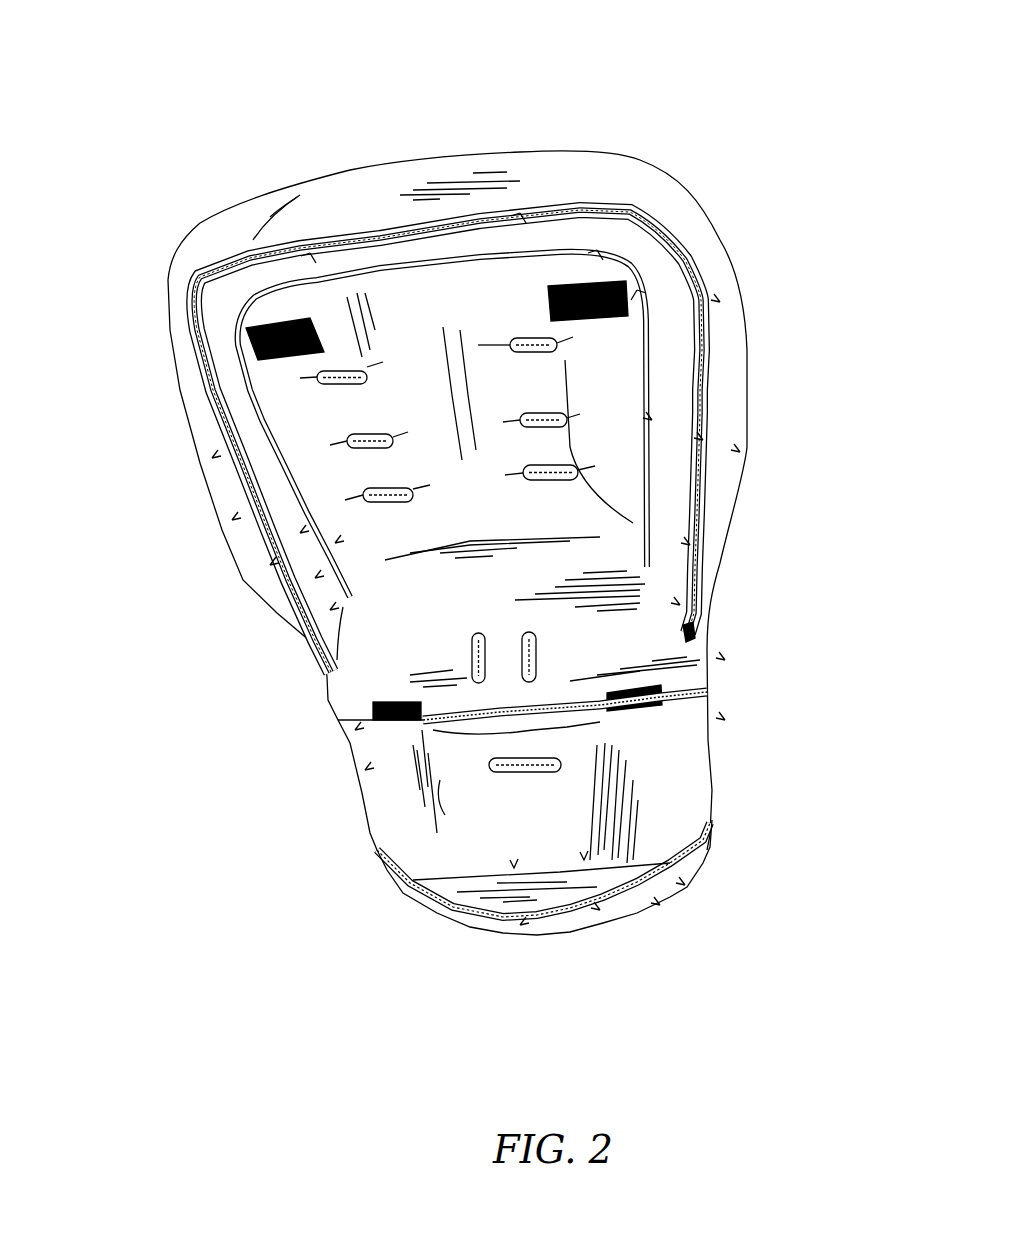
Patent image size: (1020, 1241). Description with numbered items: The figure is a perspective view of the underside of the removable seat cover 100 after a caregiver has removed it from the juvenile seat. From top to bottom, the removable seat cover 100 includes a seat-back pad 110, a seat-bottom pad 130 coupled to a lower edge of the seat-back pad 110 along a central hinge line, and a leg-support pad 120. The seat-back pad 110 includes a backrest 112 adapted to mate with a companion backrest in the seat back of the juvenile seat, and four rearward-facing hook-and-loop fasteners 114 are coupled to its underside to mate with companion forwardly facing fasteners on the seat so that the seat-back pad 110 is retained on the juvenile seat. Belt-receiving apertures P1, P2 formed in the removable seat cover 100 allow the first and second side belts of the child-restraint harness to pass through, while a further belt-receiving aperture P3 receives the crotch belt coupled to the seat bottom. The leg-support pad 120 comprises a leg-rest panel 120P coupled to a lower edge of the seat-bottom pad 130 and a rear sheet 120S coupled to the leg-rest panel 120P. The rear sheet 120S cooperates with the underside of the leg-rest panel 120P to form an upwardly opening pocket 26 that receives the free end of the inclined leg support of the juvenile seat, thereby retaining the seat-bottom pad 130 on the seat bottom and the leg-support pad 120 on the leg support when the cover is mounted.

The removable seat cover 100 is at (290, 183).
The seat-back pad 110 is at (815, 197).
The backrest 112 is at (327, 462).
The hook-and-loop fasteners 114 is at (289, 364).
The seat-bottom pad 130 is at (813, 592).
The pocket 26 is at (853, 740).
The leg-support pad 120 is at (200, 787).
The leg-rest panel 120P is at (670, 843).
The rear sheet 120S is at (360, 940).
The belt-receiving aperture P1 is at (514, 428).
The belt-receiving aperture P2 is at (405, 431).
The belt-receiving aperture P3 is at (503, 777).